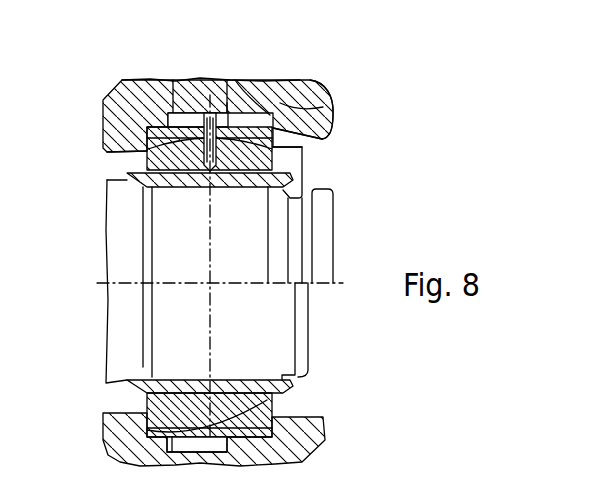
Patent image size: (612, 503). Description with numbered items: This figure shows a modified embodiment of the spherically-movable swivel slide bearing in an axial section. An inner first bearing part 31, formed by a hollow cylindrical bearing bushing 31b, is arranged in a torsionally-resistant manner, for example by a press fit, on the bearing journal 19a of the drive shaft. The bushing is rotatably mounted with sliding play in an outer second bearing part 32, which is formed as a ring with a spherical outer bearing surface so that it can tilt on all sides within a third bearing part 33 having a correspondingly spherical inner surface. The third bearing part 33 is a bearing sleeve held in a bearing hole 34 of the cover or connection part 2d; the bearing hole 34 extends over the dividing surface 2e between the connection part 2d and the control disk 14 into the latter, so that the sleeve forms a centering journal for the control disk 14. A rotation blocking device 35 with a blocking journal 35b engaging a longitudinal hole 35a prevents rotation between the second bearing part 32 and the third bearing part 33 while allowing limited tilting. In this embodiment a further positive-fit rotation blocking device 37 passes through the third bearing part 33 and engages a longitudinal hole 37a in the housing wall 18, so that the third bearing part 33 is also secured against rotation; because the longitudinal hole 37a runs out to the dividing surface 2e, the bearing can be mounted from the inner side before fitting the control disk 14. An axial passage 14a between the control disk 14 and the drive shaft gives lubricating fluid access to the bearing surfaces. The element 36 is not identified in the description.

The connection part 2d is at (318, 116).
The dividing surface 2e is at (158, 80).
The control disk 14 is at (110, 124).
The axial passage 14a is at (125, 160).
The housing wall 18 is at (322, 112).
The bearing journal 19a is at (270, 340).
The inner first bearing part 31 is at (285, 166).
The bearing bushing 31b is at (181, 186).
The outer second bearing part 32 is at (244, 160).
The third bearing part 33 is at (313, 137).
The bearing hole 34 is at (303, 112).
The rotation blocking device 35 is at (147, 188).
The longitudinal hole 35a is at (265, 113).
The blocking journal 35b is at (233, 112).
The gap 36 is at (124, 162).
The rotation blocking device 37 is at (214, 110).
The longitudinal hole 37a is at (193, 111).